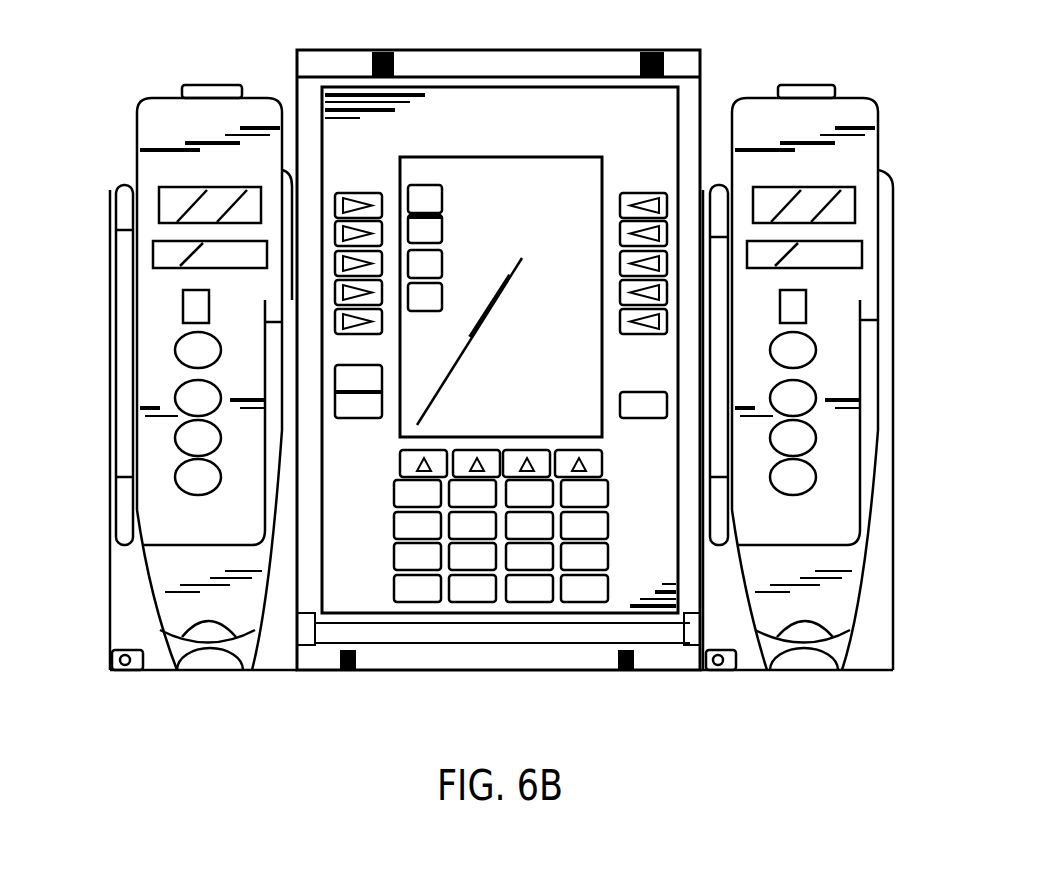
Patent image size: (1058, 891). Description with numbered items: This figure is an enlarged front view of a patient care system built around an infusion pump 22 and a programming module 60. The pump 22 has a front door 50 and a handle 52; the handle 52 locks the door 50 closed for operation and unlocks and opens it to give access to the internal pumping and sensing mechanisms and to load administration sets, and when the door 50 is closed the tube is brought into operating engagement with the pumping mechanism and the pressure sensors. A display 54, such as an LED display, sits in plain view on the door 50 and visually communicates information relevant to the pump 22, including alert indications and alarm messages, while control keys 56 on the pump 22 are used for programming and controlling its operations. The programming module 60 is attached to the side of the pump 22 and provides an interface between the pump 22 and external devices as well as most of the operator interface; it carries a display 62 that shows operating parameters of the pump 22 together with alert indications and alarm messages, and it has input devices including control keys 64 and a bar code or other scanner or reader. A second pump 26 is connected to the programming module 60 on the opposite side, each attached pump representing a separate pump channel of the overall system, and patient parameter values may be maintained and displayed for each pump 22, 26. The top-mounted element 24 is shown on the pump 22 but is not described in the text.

The pump 22 is at (855, 98).
The handle / top connector of pump module 24 is at (803, 83).
The second pump 26 is at (197, 84).
The front door 50 is at (878, 540).
The handle 52 is at (843, 613).
The display 54 is at (857, 208).
The control keys 56 is at (817, 350).
The programming module 60 is at (503, 50).
The display 62 is at (503, 157).
The control keys 64 is at (308, 267).